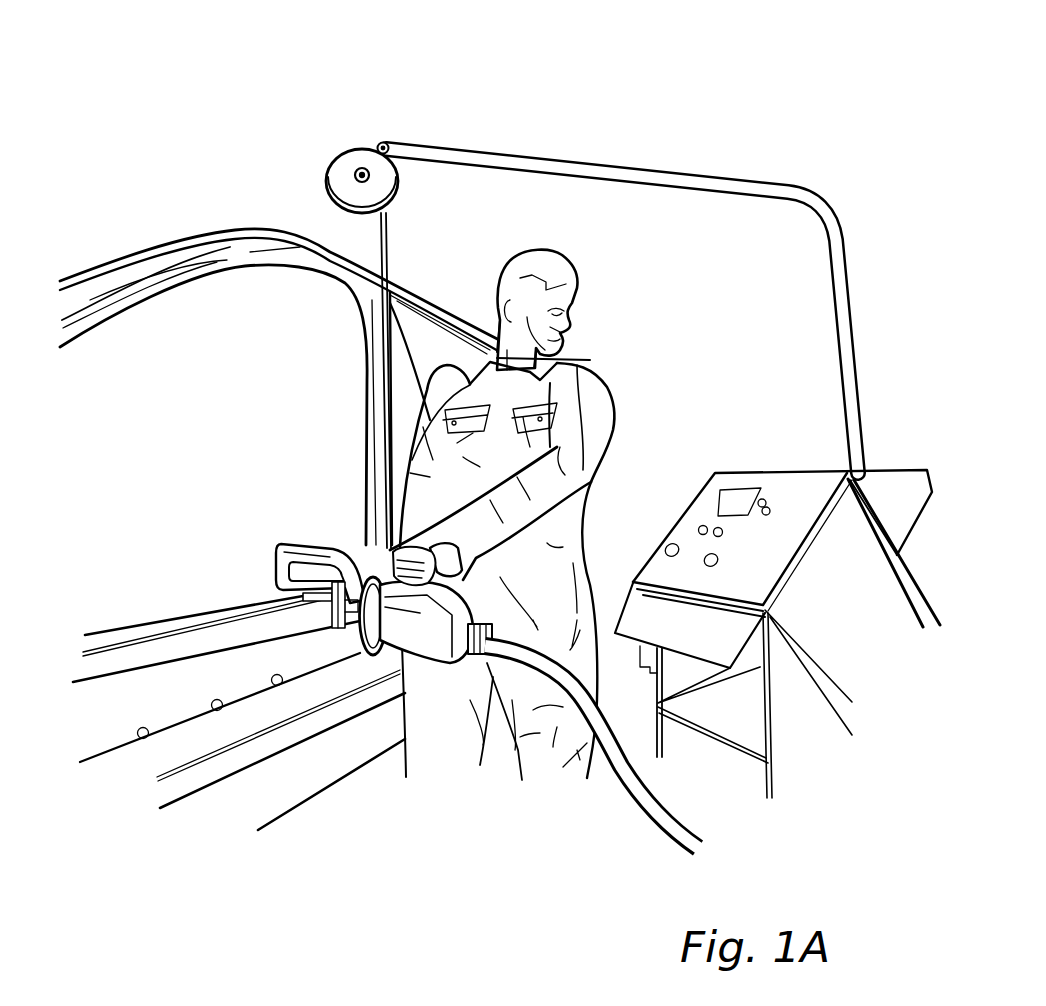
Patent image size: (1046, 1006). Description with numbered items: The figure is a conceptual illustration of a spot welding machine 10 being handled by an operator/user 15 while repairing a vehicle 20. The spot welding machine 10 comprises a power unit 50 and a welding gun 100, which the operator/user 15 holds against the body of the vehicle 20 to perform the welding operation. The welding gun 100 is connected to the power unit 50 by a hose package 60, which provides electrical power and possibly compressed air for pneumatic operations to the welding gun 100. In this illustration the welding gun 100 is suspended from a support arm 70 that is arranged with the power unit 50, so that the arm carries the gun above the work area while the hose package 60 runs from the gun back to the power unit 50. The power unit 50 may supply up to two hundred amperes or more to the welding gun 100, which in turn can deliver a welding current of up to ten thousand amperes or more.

The spot welding machine 10 is at (382, 101).
The operator/user 15 is at (545, 290).
The vehicle 20 is at (217, 618).
The power unit 50 is at (818, 563).
The hose package 60 is at (630, 792).
The support arm 70 is at (845, 297).
The welding gun 100 is at (407, 632).